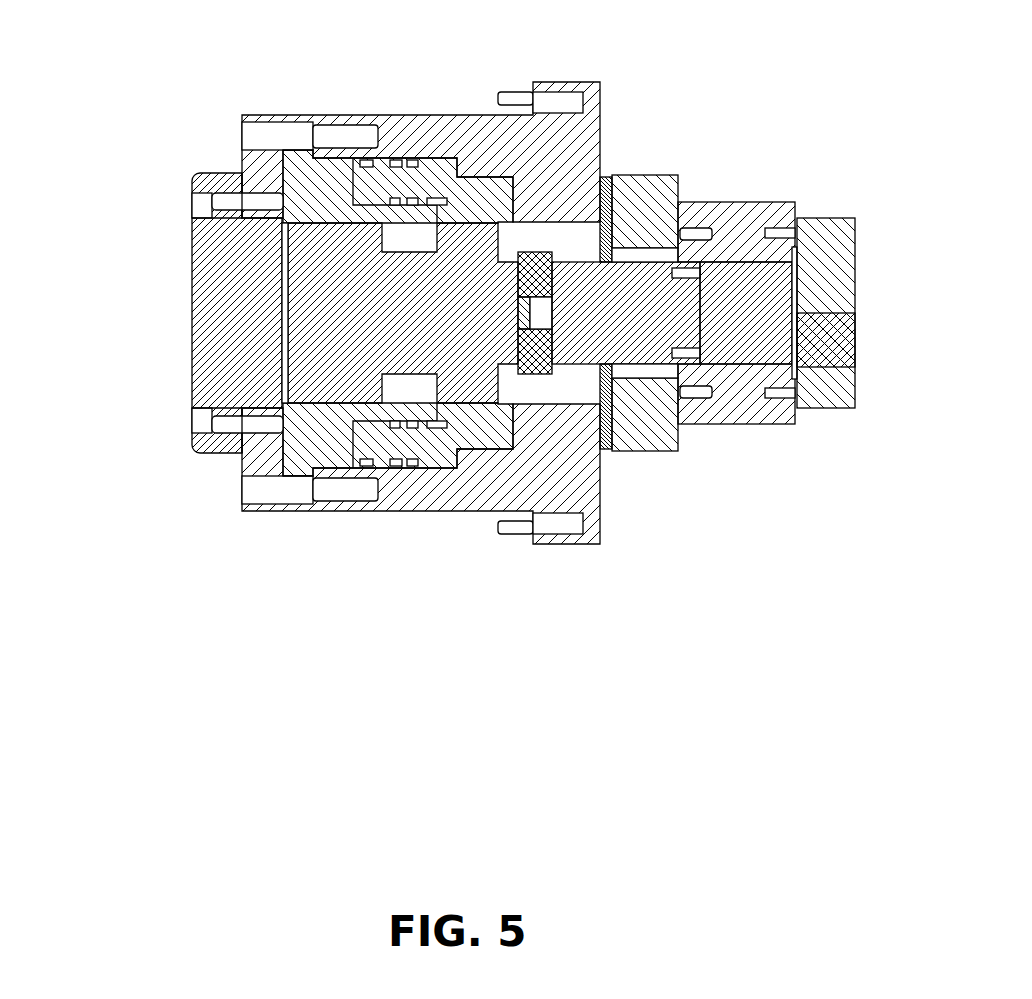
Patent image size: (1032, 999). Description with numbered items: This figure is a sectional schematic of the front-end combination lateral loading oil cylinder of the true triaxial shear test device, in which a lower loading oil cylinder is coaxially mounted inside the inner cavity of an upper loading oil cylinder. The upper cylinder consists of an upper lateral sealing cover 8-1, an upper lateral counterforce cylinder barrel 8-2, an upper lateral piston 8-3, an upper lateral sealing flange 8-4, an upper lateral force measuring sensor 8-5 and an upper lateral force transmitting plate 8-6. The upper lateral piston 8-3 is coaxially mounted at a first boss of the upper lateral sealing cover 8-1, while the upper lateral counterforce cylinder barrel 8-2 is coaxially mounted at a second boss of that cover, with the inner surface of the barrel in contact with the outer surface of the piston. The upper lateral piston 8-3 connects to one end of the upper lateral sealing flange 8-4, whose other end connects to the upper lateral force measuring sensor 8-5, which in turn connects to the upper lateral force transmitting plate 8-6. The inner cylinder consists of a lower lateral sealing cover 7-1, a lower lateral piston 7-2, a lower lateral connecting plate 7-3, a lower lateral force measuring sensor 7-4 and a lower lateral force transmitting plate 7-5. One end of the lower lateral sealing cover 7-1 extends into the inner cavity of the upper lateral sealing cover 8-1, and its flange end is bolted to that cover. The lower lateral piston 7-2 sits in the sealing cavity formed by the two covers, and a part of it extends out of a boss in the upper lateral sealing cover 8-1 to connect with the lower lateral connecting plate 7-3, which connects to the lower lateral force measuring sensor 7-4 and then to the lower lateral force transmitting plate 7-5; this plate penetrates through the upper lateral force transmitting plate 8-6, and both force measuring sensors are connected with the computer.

The lower lateral sealing cover 7-1 is at (235, 320).
The lower lateral piston 7-2 is at (360, 305).
The lower lateral connecting plate 7-3 is at (532, 268).
The lower lateral force measuring sensor 7-4 is at (628, 345).
The lower lateral force transmitting plate 7-5 is at (740, 352).
The upper lateral sealing cover 8-1 is at (318, 192).
The upper lateral counterforce cylinder barrel 8-2 is at (393, 128).
The upper lateral piston 8-3 is at (510, 437).
The upper lateral sealing flange 8-4 is at (635, 212).
The upper lateral force measuring sensor 8-5 is at (738, 222).
The upper lateral force transmitting plate 8-6 is at (825, 252).